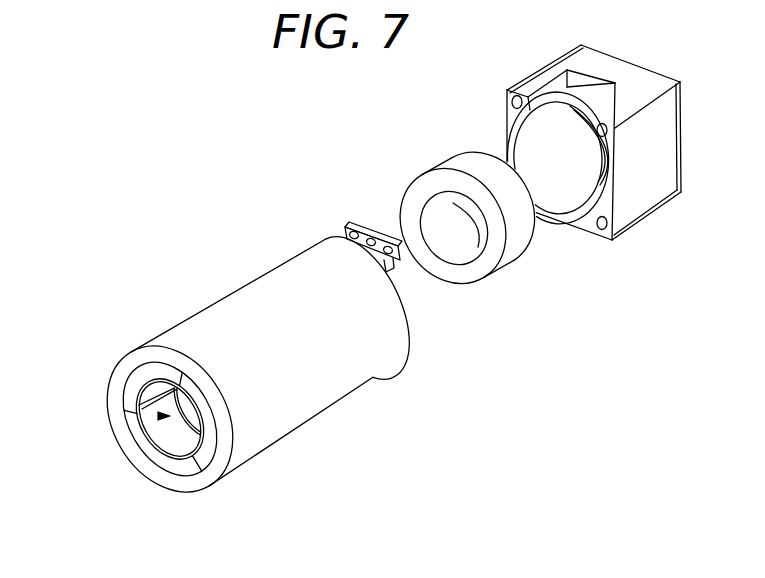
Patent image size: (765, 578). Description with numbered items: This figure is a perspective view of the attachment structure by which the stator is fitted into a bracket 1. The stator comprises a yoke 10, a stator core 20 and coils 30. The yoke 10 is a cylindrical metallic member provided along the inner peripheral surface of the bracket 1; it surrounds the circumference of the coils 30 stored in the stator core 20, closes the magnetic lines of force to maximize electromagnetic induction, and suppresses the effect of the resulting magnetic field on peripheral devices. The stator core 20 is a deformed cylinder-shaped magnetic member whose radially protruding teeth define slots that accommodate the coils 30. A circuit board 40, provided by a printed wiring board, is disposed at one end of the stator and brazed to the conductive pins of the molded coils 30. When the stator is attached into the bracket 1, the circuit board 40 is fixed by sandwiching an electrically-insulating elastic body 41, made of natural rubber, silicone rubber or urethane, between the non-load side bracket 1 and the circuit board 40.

The bracket 1 is at (542, 75).
The yoke 10 is at (242, 297).
The stator core 20 is at (157, 416).
The coils 30 is at (135, 385).
The circuit board 40 is at (362, 225).
The electrically-insulating elastic body 41 is at (455, 163).